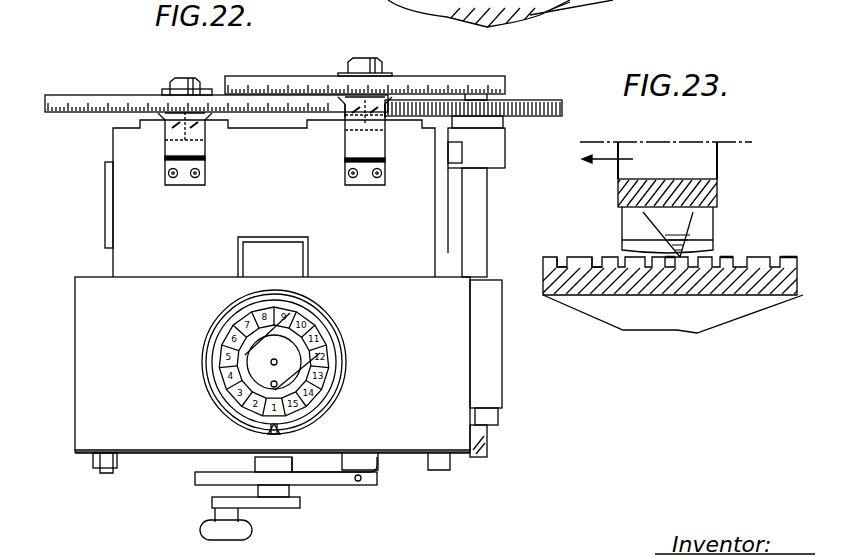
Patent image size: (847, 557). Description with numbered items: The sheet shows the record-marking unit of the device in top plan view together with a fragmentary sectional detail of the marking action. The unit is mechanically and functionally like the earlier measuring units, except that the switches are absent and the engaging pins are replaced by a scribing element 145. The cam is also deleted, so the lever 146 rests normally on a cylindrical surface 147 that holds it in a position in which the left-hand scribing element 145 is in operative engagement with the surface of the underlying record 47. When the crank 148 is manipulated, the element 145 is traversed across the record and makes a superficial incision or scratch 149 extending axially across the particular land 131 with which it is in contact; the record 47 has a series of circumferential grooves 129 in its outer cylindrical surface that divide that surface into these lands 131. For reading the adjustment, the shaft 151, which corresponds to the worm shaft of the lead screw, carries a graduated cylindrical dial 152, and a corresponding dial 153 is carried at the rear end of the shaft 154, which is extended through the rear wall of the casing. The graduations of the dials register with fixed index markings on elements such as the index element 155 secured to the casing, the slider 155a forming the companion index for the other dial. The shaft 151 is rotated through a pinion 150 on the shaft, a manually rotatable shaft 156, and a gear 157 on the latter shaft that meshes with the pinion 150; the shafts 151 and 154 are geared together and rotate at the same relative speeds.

In FIG. 22, the record 47 is at (557, 7).
In FIG. 22, the graduated cylindrical dial 153 is at (93, 96).
In FIG. 22, the shaft 154 is at (183, 78).
In FIG. 22, the graduated cylindrical dial 152 is at (437, 80).
In FIG. 22, the shaft 151 is at (362, 60).
In FIG. 22, the gear 157 is at (537, 102).
In FIG. 22, the pinion 150 is at (337, 100).
In FIG. 22, the index element 155 is at (347, 143).
In FIG. 22, the vernier slider 155a is at (200, 151).
In FIG. 22, the manually rotatable shaft 156 is at (478, 208).
In FIG. 22, the lever 146 is at (340, 481).
In FIG. 22, the cylindrical surface 147 is at (290, 478).
In FIG. 22, the crank 148 is at (215, 500).
In FIG. 23, the scribing element 145 is at (680, 245).
In FIG. 23, the circumferential grooves 129 is at (592, 268).
In FIG. 23, the circumferential lands 131 is at (600, 258).
In FIG. 23, the scratch 149 is at (785, 257).